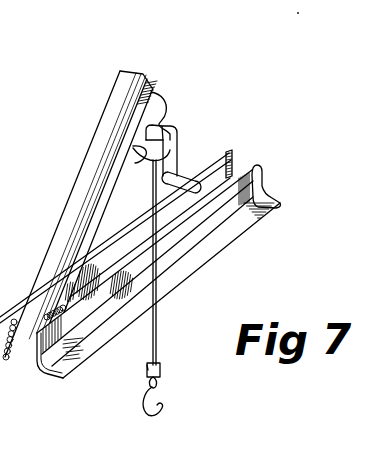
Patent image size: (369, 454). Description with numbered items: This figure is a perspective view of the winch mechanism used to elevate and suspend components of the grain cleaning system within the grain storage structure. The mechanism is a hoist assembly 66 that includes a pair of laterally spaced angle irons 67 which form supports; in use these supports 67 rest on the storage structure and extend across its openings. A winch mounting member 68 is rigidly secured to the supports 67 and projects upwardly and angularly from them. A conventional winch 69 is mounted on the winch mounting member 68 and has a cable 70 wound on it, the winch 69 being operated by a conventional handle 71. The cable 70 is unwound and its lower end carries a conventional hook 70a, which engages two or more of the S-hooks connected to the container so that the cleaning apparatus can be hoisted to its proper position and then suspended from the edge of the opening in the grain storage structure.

The hoist assembly 66 is at (215, 94).
The angle irons 67 is at (252, 166).
The winch mounting member 68 is at (94, 149).
The winch 69 is at (170, 110).
The cable 70 is at (158, 318).
The hook 70a is at (160, 405).
The handle 71 is at (180, 170).